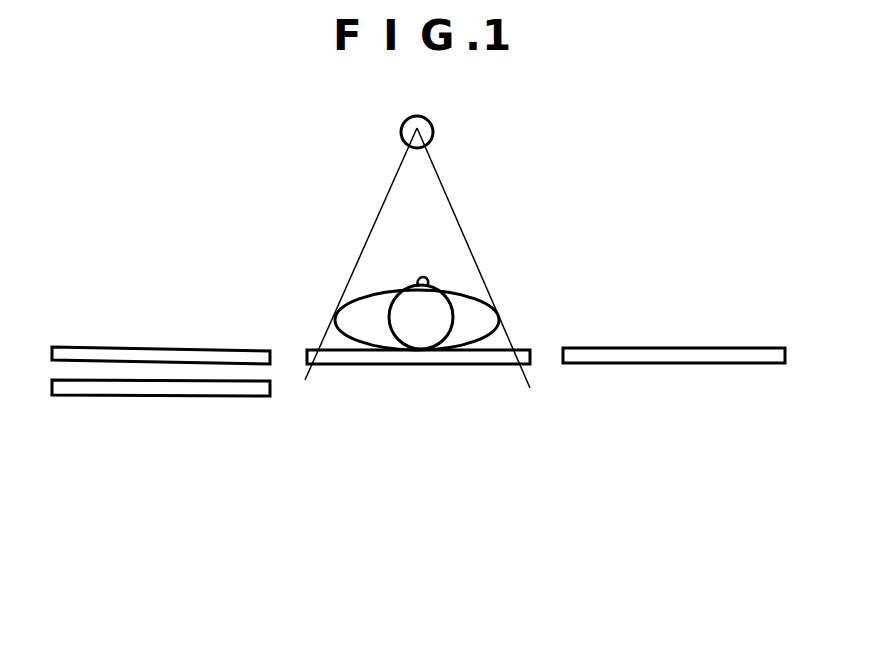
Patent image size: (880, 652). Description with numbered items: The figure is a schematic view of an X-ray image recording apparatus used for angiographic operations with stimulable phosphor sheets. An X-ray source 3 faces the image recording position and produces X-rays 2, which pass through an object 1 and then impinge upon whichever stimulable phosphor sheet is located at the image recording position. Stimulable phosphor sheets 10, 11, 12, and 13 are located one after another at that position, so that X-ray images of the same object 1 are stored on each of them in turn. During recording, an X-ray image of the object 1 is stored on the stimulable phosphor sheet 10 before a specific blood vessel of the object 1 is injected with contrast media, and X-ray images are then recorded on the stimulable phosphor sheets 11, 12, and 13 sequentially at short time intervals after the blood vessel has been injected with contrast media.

The object 1 is at (472, 305).
The X-rays 2 is at (463, 230).
The X-ray source 3 is at (433, 128).
The stimulable phosphor sheet 10 is at (753, 360).
The stimulable phosphor sheet 11 is at (503, 362).
The stimulable phosphor sheet 12 is at (107, 350).
The stimulable phosphor sheet 13 is at (110, 388).